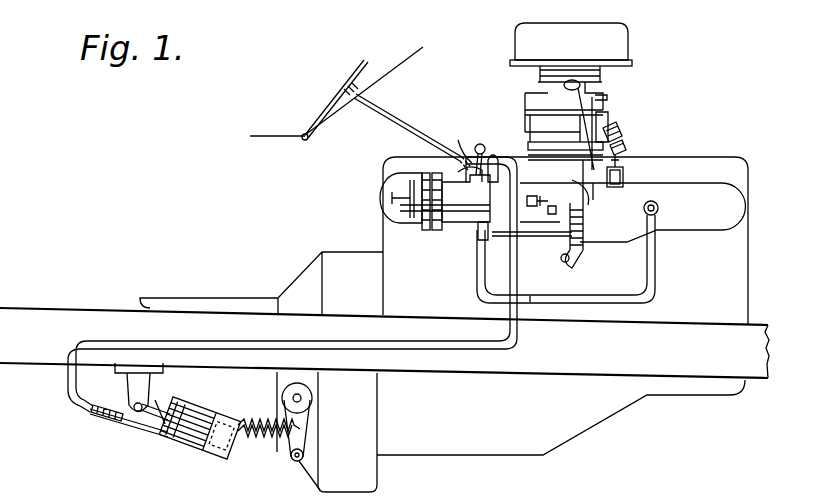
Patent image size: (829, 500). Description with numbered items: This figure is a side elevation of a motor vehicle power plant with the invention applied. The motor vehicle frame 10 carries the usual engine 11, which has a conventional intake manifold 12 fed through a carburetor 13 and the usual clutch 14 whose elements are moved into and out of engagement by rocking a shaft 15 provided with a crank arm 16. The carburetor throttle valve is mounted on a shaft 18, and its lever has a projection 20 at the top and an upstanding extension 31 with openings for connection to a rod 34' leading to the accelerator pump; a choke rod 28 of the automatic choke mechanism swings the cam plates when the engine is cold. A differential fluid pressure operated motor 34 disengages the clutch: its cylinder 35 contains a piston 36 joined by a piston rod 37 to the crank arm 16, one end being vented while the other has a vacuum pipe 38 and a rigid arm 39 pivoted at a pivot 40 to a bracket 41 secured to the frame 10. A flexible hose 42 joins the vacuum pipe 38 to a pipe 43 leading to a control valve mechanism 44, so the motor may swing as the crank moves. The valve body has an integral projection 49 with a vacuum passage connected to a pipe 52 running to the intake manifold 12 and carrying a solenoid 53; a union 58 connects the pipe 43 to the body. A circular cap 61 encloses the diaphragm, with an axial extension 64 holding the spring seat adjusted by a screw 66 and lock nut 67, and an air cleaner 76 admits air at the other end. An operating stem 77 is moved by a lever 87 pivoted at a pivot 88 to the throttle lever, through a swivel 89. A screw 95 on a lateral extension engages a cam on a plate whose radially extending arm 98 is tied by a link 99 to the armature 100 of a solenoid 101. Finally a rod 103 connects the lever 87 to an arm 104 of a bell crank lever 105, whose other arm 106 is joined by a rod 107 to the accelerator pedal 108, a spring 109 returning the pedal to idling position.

The motor vehicle frame 10 is at (684, 324).
The engine 11 is at (717, 163).
The intake manifold 12 is at (682, 183).
The carburetor 13 is at (608, 118).
The clutch 14 is at (345, 252).
The shaft 15 is at (312, 398).
The crank arm 16 is at (308, 424).
The throttle shaft 18 is at (590, 206).
The projection 20 is at (554, 150).
The choke rod 28 is at (560, 88).
The upstanding extension 31 is at (588, 208).
The differential fluid pressure operated motor 34 is at (199, 415).
The rod 34' is at (635, 127).
The cylinder 35 is at (182, 448).
The piston 36 is at (229, 418).
The piston rod 37 is at (288, 466).
The vacuum pipe 38 is at (148, 433).
The rigid arm 39 is at (165, 400).
The pivot 40 is at (134, 404).
The bracket 41 is at (126, 382).
The flexible hose 42 is at (107, 420).
The pipe 43 is at (82, 410).
The control valve mechanism 44 is at (438, 232).
The integral projection 49 is at (466, 224).
The pipe 52 is at (603, 300).
The solenoid 53 is at (480, 242).
The union 58 is at (458, 170).
The circular cap 61 is at (413, 232).
The axial extension 64 is at (417, 182).
The screw 66 is at (424, 229).
The lock nut 67 is at (402, 185).
The air cleaner 76 is at (496, 162).
The operating stem 77 is at (548, 212).
The lever 87 is at (542, 289).
The pivot 88 is at (575, 262).
The swivel 89 is at (540, 228).
The screw 95 is at (535, 200).
The radially extending arm 98 is at (626, 150).
The link 99 is at (622, 162).
The armature 100 is at (624, 175).
The solenoid 101 is at (616, 188).
The rod 103 is at (530, 240).
The arm 104 is at (484, 248).
The bell crank lever 105 is at (481, 143).
The arm 106 is at (460, 132).
The rod 107 is at (413, 121).
The accelerator pedal 108 is at (343, 90).
The spring 109 is at (381, 74).